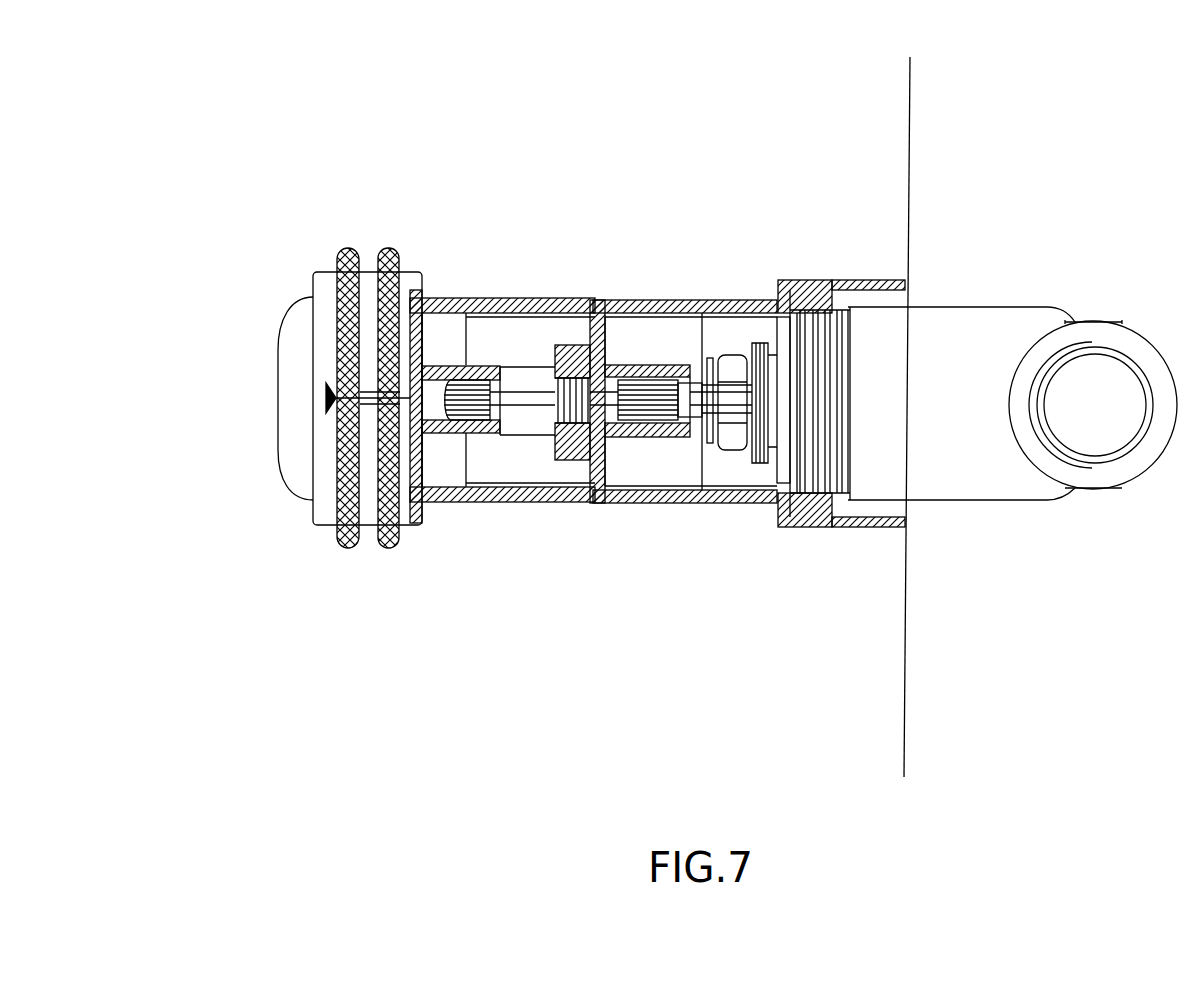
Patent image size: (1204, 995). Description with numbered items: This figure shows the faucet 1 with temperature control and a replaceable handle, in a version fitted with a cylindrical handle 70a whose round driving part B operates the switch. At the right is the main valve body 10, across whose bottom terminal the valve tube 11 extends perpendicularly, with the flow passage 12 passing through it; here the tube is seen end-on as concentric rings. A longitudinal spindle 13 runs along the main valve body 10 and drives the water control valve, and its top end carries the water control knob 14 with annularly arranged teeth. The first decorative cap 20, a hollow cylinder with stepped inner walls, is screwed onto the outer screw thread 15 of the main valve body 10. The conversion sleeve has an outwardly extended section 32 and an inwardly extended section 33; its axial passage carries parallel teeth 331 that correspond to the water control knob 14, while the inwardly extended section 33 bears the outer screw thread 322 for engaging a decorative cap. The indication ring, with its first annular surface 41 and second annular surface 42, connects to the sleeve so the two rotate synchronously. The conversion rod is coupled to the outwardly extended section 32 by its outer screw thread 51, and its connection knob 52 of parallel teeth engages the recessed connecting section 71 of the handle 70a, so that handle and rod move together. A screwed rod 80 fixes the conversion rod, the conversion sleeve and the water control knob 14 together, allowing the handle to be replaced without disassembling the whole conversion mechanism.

The faucet 1 is at (622, 140).
The cylindrical driving part B is at (343, 252).
The handle 70a is at (290, 385).
The connecting section 71 is at (470, 390).
The outer screw thread 51 is at (461, 392).
The screwed rod 80 is at (525, 400).
The outwardly extended section 32 is at (529, 303).
The outer screw thread 322 is at (585, 345).
The connection knob 52 is at (570, 345).
The inwardly extended section 33 is at (652, 365).
The parallel teeth 331 is at (640, 380).
The water control knob 14 is at (684, 380).
The spindle 13 is at (693, 380).
The first annular surface 41 is at (712, 358).
The second annular surface 42 is at (740, 355).
The first decorative cap 20 is at (806, 305).
The outer screw thread 15 is at (850, 312).
The main valve body 10 is at (958, 320).
The valve tube 11 is at (1148, 350).
The flow passage 12 is at (1087, 375).